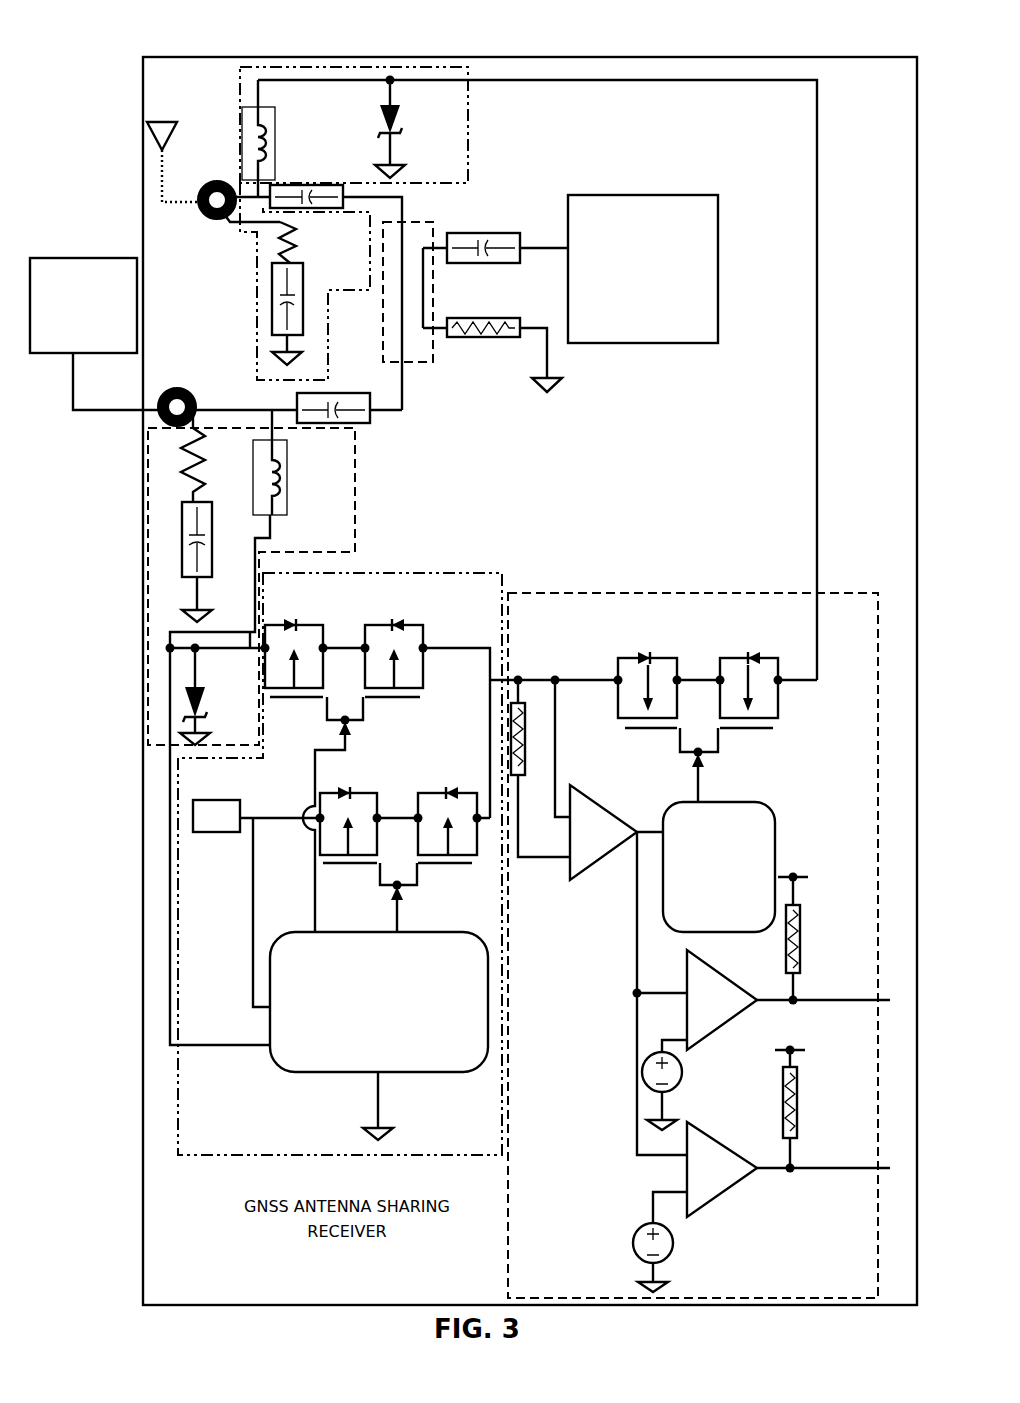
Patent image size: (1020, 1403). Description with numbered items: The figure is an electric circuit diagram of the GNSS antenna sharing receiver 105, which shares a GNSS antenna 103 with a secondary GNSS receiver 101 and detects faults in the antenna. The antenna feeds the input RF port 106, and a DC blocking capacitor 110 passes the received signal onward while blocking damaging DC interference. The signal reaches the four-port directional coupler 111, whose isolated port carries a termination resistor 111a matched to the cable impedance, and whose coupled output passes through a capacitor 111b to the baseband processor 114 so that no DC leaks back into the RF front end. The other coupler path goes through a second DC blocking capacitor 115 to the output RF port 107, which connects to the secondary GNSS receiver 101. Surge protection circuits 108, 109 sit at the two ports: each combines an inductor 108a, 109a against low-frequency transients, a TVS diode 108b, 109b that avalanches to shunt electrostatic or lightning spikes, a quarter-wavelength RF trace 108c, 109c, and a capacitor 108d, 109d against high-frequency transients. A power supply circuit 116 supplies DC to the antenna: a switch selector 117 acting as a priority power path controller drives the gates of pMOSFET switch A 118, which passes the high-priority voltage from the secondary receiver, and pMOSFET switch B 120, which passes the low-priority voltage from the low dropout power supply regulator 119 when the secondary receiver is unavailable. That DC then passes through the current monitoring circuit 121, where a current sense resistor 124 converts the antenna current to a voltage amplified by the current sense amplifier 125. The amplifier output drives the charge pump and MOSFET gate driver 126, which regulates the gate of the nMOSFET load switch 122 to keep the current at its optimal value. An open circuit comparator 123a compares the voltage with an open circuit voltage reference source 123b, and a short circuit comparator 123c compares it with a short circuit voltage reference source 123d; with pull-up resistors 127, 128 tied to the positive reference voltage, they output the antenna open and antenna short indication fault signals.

The secondary GNSS receiver 101 is at (85, 258).
The GNSS antenna 103 is at (172, 122).
The GNSS antenna sharing receiver 105 is at (808, 57).
The input RF port 106 is at (217, 181).
The output RF port 107 is at (196, 396).
The surge protection circuit 108 is at (468, 133).
The inductor 108a is at (276, 147).
The TVS diode 108b is at (398, 122).
The λ/4 length RF trace 108c is at (293, 256).
The capacitor 108d is at (303, 318).
The surge protection circuit 109 is at (355, 505).
The inductor 109a is at (288, 488).
The TVS diode 109b is at (202, 700).
The λ/4 length RF trace 109c is at (201, 469).
The capacitor 109d is at (215, 560).
The DC blocking capacitor 110 is at (345, 185).
The coupler 111 is at (416, 223).
The termination resistor 111a is at (500, 318).
The capacitor 111b is at (481, 235).
The baseband processor 114 is at (718, 240).
The DC blocking capacitor 115 is at (333, 393).
The power supply circuit 116 is at (418, 573).
The switch selector 117 is at (450, 932).
The switch A 118 is at (325, 628).
The power supply regulator 119 is at (235, 800).
The switch B 120 is at (380, 800).
The current monitoring circuit 121 is at (600, 593).
The load switch 122 is at (680, 660).
The open circuit comparator 123a is at (735, 965).
The open circuit voltage reference source 123b is at (680, 1087).
The short circuit comparator 123c is at (720, 1147).
The short circuit voltage reference source 123d is at (672, 1258).
The current sense resistor 124 is at (540, 708).
The current sense amplifier 125 is at (603, 808).
The charge pump and MOSFET gate driver 126 is at (777, 828).
The pull-up resistor 127 is at (801, 945).
The pull-up resistor 128 is at (798, 1120).